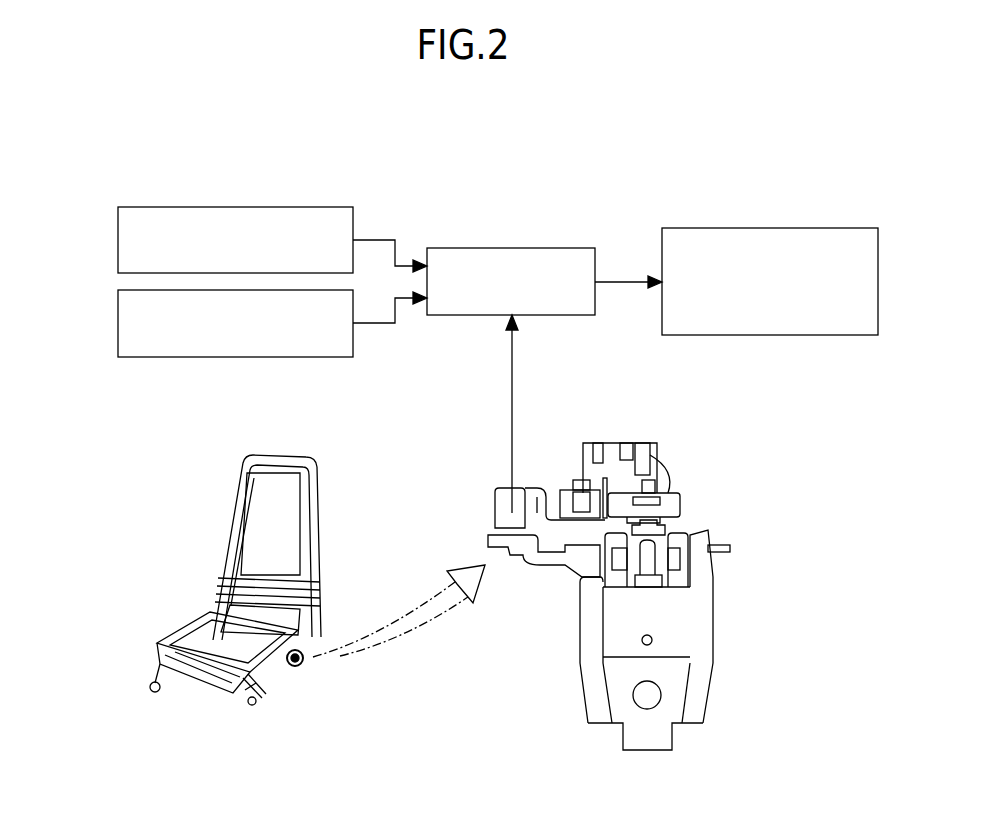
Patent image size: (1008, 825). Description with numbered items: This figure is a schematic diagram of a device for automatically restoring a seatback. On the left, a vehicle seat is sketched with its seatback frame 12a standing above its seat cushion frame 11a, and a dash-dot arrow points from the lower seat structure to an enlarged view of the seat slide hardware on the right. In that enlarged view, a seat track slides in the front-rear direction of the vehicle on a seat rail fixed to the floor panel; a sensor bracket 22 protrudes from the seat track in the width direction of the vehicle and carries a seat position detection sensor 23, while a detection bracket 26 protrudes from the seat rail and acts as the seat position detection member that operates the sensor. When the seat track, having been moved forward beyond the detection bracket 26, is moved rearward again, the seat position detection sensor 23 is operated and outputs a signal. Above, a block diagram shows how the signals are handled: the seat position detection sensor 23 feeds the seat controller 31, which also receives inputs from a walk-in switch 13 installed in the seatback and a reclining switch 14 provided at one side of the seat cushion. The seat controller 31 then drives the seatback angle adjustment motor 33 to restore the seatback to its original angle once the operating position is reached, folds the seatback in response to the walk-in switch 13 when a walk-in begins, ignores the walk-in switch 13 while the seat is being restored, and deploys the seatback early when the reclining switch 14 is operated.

The seat cushion frame 11a is at (182, 625).
The seatback frame 12a is at (318, 534).
The walk-in switch 13 is at (118, 245).
The reclining switch 14 is at (118, 323).
The sensor bracket 22 is at (530, 490).
The seat position detection sensor 23 is at (500, 510).
The detection bracket 26 is at (510, 548).
The seat controller 31 is at (511, 248).
The seatback angle adjustment motor 33 is at (770, 228).